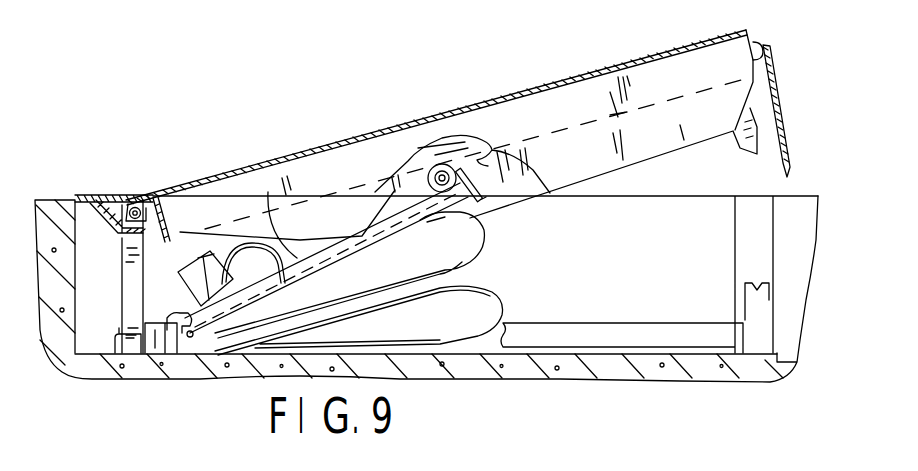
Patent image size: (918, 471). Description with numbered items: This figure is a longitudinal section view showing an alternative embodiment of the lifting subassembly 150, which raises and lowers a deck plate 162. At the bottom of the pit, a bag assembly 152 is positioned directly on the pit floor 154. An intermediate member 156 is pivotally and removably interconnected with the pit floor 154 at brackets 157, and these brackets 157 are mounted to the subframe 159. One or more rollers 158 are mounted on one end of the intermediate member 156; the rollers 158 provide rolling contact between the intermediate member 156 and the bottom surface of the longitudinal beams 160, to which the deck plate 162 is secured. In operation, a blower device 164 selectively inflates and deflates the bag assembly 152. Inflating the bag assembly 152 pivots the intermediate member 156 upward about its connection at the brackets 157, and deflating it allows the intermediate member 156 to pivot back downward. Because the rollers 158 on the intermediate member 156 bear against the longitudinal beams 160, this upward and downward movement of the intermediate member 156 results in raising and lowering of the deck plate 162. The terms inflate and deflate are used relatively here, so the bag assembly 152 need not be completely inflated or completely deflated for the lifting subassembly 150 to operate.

The lifting subassembly 150 is at (548, 248).
The bag assembly 152 is at (492, 296).
The pit floor 154 is at (488, 347).
The intermediate member 156 is at (272, 232).
The brackets 157 is at (173, 322).
The rollers 158 is at (407, 162).
The subframe 159 is at (135, 337).
The longitudinal beams 160 is at (481, 163).
The deck plate 162 is at (590, 73).
The blower device 164 is at (183, 210).